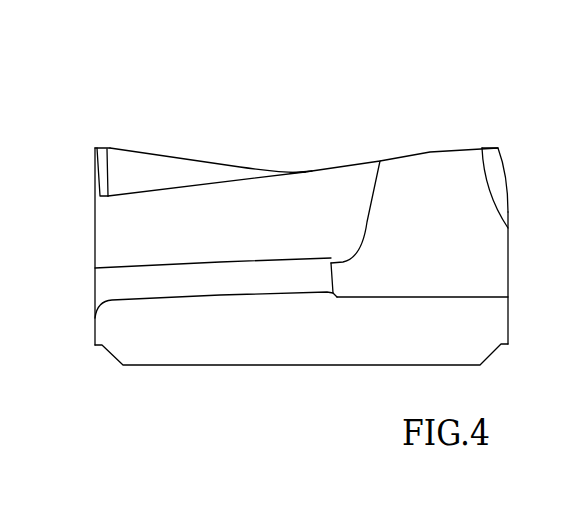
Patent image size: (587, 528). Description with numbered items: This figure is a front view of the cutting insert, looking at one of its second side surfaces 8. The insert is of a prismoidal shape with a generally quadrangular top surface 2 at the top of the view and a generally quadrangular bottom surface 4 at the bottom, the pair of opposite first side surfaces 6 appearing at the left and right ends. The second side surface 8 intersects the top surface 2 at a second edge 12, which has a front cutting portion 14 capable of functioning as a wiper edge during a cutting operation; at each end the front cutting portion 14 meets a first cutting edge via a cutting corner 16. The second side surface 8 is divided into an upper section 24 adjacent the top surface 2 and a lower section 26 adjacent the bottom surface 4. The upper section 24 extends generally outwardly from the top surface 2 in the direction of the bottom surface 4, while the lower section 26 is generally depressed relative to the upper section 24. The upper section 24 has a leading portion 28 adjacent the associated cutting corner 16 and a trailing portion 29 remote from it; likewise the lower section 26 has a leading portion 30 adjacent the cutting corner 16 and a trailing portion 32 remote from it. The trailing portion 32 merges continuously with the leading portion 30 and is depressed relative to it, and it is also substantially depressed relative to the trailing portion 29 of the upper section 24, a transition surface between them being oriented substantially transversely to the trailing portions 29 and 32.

The top surface 2 is at (307, 130).
The bottom surface 4 is at (186, 373).
The first side surface 6 is at (86, 226).
The second side surface 8 is at (229, 248).
The second edge 12 is at (279, 166).
The front cutting portion 14 is at (123, 148).
The cutting corner 16 is at (103, 148).
The upper section 24 is at (328, 191).
The lower section 26 is at (285, 343).
The leading portion 28 is at (445, 211).
The trailing portion 29 is at (153, 242).
The leading portion 30 is at (422, 344).
The trailing portion 32 is at (180, 345).